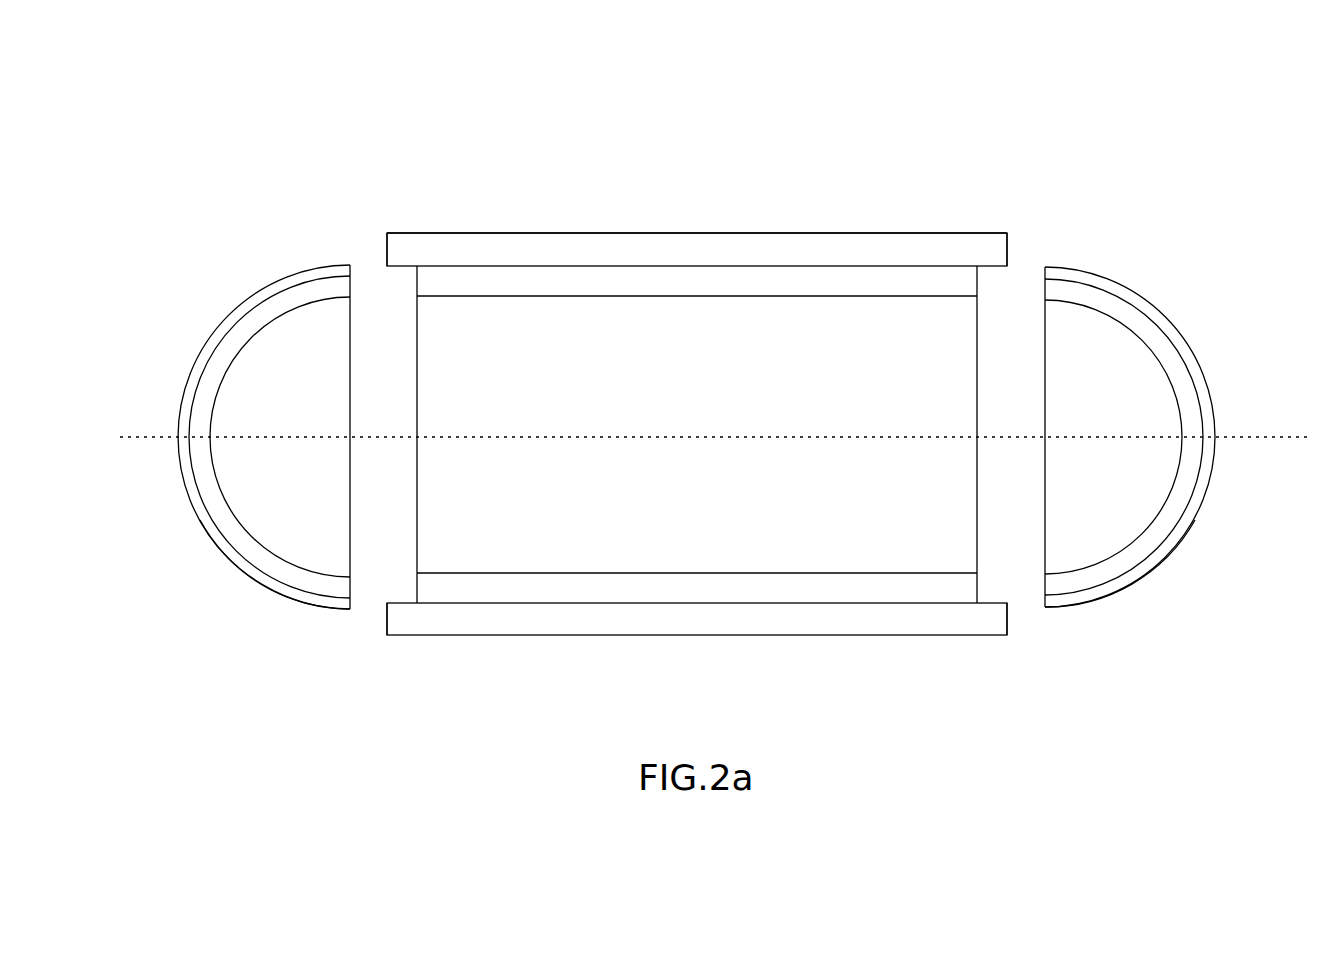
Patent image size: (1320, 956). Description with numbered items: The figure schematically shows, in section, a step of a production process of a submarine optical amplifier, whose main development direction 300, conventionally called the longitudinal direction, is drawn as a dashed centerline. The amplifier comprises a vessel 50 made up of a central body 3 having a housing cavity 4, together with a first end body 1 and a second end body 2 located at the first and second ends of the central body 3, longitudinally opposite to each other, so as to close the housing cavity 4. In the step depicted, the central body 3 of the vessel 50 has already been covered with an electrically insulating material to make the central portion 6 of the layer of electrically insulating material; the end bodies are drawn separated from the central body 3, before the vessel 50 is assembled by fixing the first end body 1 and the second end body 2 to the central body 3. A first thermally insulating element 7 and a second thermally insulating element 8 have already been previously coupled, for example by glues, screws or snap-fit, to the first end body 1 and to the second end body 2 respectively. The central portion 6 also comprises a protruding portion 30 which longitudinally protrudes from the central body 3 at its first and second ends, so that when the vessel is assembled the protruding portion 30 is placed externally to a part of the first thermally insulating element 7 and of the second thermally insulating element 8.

The first end body 1 is at (1175, 363).
The second end body 2 is at (233, 348).
The central body 3 is at (540, 282).
The housing cavity 4 is at (709, 387).
The central portion of layer of electrically insulating material 6 is at (550, 613).
The first thermally insulating element 7 is at (1150, 552).
The second thermally insulating element 8 is at (223, 537).
The protruding portion 30 is at (376, 241).
The vessel 50 is at (843, 253).
The main development direction 300 is at (158, 437).